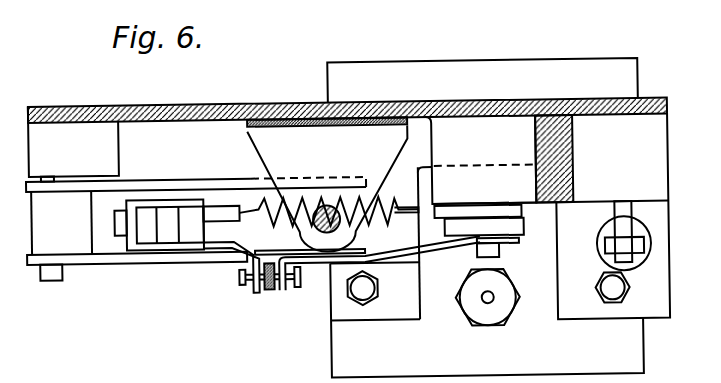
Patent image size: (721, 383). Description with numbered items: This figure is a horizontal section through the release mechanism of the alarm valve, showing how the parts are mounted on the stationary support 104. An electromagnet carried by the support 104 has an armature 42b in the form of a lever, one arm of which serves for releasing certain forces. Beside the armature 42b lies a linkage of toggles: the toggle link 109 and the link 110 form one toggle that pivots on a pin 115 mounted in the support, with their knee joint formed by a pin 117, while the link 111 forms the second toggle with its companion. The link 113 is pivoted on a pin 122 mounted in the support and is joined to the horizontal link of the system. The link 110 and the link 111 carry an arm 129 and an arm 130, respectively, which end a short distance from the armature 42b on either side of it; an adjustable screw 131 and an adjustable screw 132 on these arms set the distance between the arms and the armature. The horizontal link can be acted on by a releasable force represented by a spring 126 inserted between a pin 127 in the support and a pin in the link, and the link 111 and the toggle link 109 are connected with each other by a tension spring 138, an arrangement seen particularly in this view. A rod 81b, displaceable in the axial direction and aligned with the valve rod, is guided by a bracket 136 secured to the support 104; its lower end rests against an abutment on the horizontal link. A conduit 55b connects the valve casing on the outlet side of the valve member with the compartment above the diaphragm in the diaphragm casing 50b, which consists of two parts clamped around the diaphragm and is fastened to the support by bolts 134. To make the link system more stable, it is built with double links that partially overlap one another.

The support 104 is at (232, 106).
The diaphragm casing 50b is at (467, 79).
The link 113 is at (100, 189).
The pin 122 is at (52, 281).
The tension spring 138 is at (254, 192).
The link 111 is at (153, 249).
The bracket 136 is at (266, 157).
The rod 81b is at (334, 211).
The toggle link 109 is at (510, 217).
The pin 115 is at (479, 204).
The link 110 is at (506, 249).
The pin 117 is at (490, 263).
The arm 129 is at (380, 258).
The arm 130 is at (238, 254).
The adjustable screw 132 is at (237, 281).
The armature 42b is at (262, 290).
The adjustable screw 131 is at (296, 291).
The bolts 134 is at (360, 293).
The conduit 55b is at (485, 305).
The pin 127 is at (622, 222).
The spring 126 is at (604, 235).